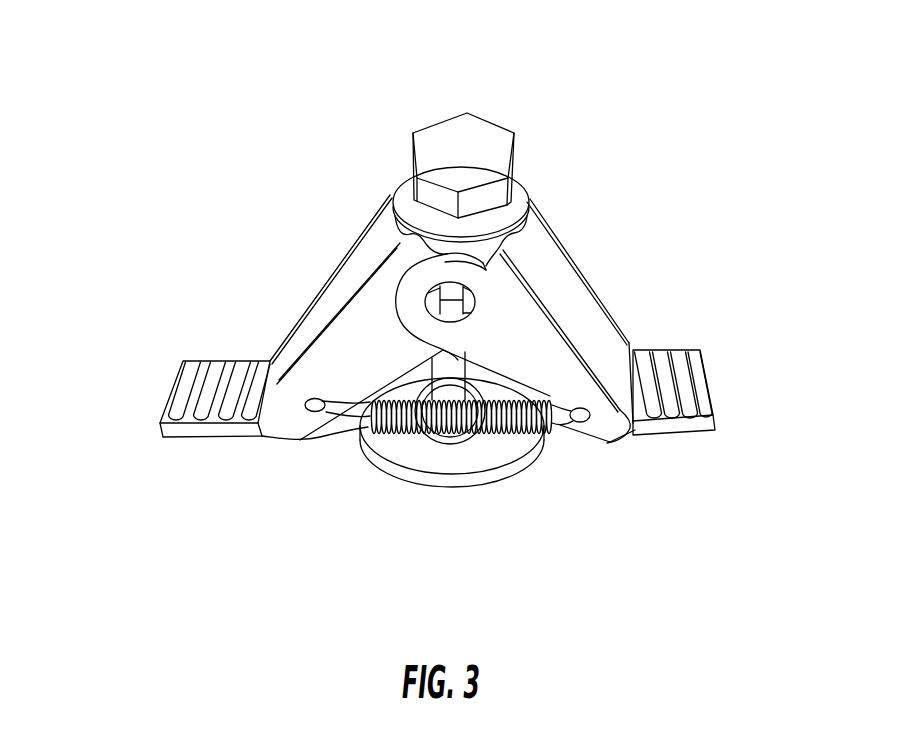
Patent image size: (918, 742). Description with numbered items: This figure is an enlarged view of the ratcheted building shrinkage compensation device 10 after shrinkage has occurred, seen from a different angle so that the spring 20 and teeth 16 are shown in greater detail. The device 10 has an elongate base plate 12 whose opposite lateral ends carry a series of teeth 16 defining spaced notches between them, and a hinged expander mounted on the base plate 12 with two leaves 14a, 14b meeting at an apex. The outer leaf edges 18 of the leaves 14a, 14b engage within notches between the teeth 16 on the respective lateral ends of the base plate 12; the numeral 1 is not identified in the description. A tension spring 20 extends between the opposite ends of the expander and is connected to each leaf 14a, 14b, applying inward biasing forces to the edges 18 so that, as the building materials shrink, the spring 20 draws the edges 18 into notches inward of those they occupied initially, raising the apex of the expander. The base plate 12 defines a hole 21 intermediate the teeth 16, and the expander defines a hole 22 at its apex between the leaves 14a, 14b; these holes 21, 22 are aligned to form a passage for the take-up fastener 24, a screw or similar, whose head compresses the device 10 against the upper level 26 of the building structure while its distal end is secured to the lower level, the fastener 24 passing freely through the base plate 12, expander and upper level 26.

The ratcheted building shrinkage compensation device 10 is at (243, 228).
The elongate base plate 12 is at (362, 420).
The leaf 14a is at (338, 268).
The leaf 14b is at (569, 262).
The teeth 16 is at (200, 388).
The gripping pad 1 is at (698, 348).
The outer leaf edges 18 is at (630, 347).
The spring 20 is at (524, 432).
The hole 21 is at (447, 430).
The hole 22 is at (388, 228).
The take-up fastener 24 is at (518, 168).
The upper level of a building structure 26 is at (677, 562).